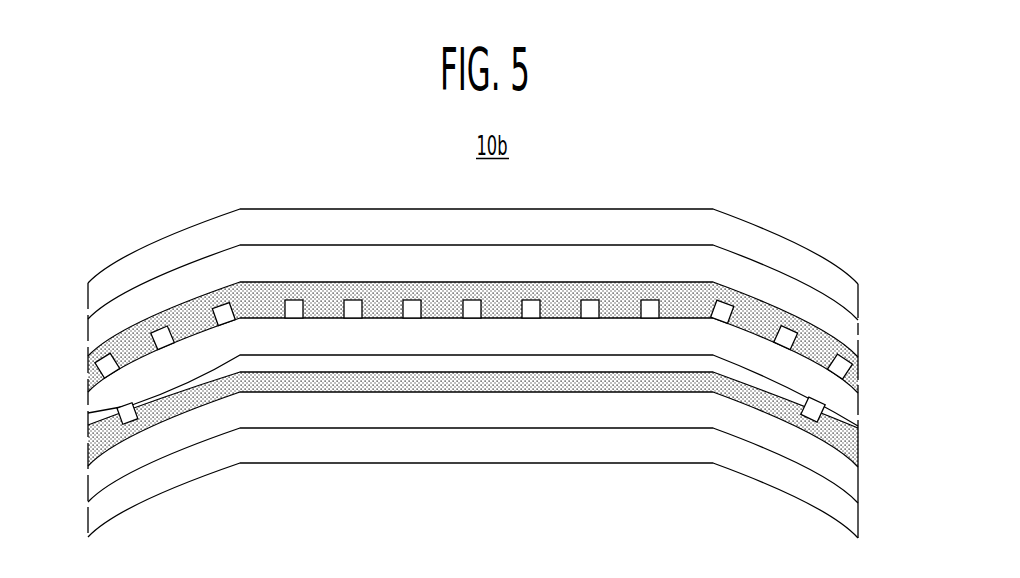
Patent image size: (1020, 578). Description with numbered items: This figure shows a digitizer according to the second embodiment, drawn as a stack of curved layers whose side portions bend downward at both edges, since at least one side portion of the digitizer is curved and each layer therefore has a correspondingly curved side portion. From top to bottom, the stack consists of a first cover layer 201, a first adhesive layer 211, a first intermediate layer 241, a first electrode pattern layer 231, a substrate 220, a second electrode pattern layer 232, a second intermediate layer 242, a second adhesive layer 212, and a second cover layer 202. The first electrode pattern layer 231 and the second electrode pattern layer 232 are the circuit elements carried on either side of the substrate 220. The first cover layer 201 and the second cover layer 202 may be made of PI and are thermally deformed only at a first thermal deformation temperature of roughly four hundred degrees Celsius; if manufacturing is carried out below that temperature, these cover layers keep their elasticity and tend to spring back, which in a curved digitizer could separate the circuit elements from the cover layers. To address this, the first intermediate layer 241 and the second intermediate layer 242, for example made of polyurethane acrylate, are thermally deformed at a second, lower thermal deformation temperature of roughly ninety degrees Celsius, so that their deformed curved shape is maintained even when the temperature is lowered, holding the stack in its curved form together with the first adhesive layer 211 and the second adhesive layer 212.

The first cover layer 201 is at (851, 300).
The first adhesive layer 211 is at (848, 337).
The first intermediate layer 241 is at (851, 377).
The first electrode pattern layer 231 is at (103, 362).
The substrate 220 is at (848, 410).
The second intermediate layer 242 is at (851, 449).
The second electrode pattern layer 232 is at (110, 405).
The second adhesive layer 212 is at (848, 484).
The second cover layer 202 is at (851, 523).